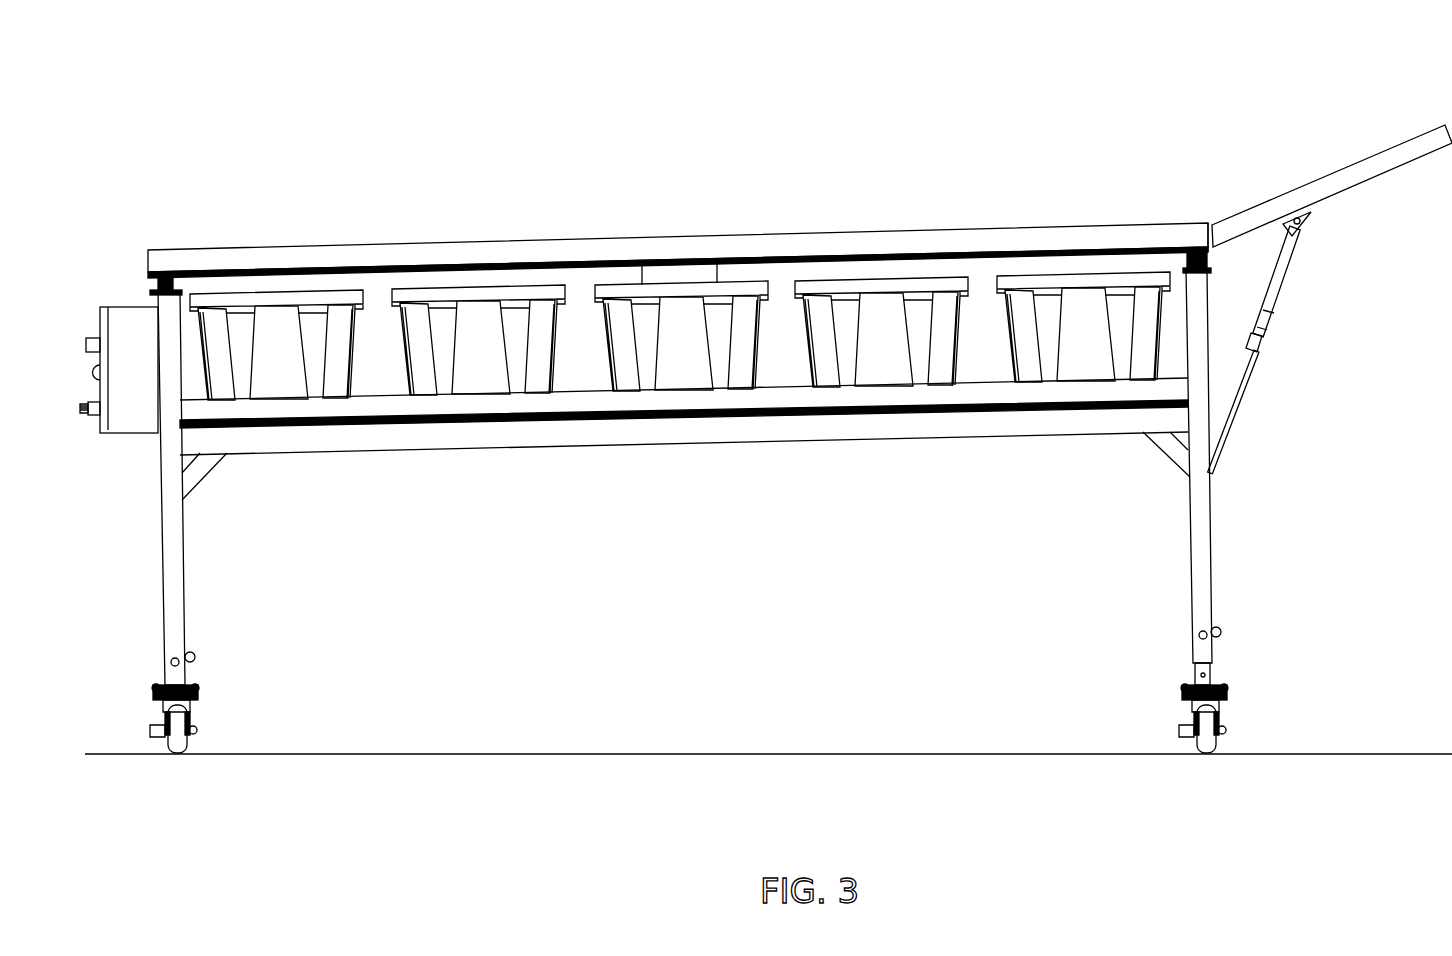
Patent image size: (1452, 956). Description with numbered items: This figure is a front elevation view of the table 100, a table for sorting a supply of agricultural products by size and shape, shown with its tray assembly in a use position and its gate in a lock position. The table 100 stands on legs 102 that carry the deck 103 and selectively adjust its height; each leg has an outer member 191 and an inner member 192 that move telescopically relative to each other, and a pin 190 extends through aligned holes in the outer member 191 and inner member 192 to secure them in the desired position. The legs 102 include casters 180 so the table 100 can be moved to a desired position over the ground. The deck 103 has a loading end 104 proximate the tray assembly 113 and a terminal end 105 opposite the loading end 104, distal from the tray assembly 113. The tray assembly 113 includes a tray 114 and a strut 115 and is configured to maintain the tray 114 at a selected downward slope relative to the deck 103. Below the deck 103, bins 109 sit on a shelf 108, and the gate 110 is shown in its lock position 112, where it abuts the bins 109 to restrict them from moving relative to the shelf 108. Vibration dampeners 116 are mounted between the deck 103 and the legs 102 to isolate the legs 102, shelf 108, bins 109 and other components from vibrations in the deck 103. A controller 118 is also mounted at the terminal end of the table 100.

The table 100 is at (857, 110).
The legs 102 is at (728, 506).
The deck 103 is at (1071, 214).
The loading end 104 is at (1216, 212).
The terminal end 105 is at (134, 252).
The shelf 108 is at (886, 426).
The bin 109 is at (1085, 371).
The gate 110 is at (986, 396).
The lock position 112 is at (795, 406).
The tray assembly 113 is at (1330, 279).
The tray 114 is at (1428, 145).
The strut 115 is at (1260, 320).
The vibration dampeners 116 is at (176, 290).
The controller 118 is at (135, 422).
The casters 180 is at (1206, 739).
The pin 190 is at (1207, 637).
The outer member 191 is at (1209, 578).
The inner member 192 is at (1211, 683).